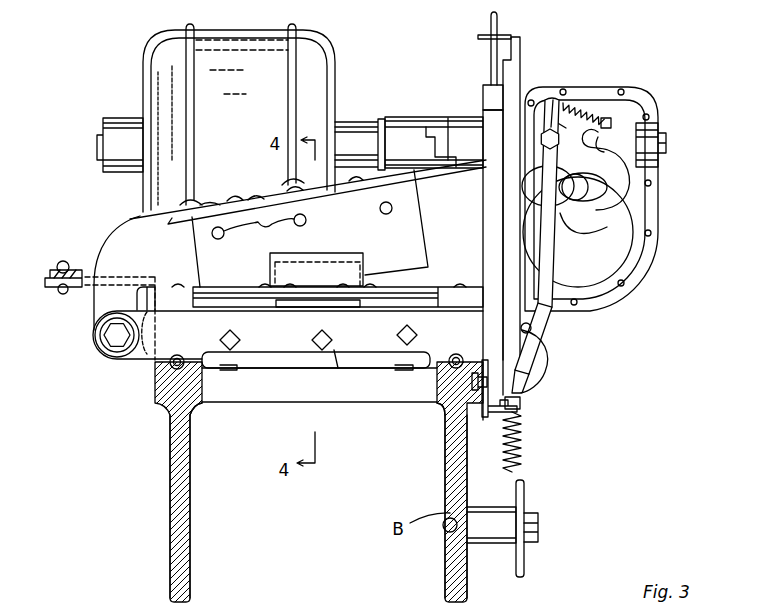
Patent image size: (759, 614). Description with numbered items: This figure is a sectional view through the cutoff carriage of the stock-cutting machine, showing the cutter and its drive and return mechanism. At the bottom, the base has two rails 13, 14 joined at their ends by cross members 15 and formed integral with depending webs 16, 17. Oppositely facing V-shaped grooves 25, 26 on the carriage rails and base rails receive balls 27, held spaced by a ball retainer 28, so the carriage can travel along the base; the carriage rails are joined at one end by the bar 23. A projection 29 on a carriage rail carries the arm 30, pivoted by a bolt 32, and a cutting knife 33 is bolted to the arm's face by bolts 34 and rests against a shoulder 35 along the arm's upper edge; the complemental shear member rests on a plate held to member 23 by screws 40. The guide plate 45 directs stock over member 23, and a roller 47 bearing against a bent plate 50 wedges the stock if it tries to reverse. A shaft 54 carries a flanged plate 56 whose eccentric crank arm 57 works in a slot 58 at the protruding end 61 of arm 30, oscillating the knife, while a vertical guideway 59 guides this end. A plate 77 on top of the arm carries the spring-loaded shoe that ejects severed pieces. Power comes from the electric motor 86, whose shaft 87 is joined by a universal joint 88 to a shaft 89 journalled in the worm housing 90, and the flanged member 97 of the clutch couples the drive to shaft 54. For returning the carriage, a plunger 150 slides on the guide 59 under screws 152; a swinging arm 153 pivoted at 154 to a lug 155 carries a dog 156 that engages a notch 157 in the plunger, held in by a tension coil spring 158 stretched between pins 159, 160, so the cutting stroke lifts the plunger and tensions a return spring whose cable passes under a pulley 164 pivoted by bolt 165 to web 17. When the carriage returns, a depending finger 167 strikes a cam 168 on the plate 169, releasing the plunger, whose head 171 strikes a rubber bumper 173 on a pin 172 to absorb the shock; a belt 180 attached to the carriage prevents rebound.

The rail 13 is at (175, 408).
The rail 14 is at (440, 402).
The cross members 15 is at (280, 393).
The web 16 is at (182, 520).
The web 17 is at (453, 480).
The bar 23 is at (335, 350).
The V-shaped groove 25 is at (178, 357).
The V-shaped groove 26 is at (198, 410).
The balls 27 is at (158, 398).
The ball retainer 28 is at (147, 358).
The projection 29 is at (100, 352).
The arm 30 is at (120, 235).
The bolt 32 is at (107, 333).
The cutting knife 33 is at (203, 245).
The bolts 34 is at (259, 229).
The shoulder 35 is at (217, 200).
The screws 40 is at (317, 364).
The plate 45 is at (232, 292).
The roller 47 is at (286, 303).
The bent plate 50 is at (343, 252).
The shaft 54 is at (583, 230).
The flanged plate 56 is at (604, 247).
The crank arm 57 is at (606, 202).
The slot 58 is at (618, 166).
The vertical guideway 59 is at (495, 198).
The protruding end 61 is at (619, 182).
The plate 77 is at (253, 195).
The electric motor 86 is at (150, 53).
The shaft 87 is at (375, 142).
The universal joint 88 is at (443, 127).
The shaft 89 is at (663, 137).
The housing 90 is at (609, 293).
The flanged member 97 is at (618, 263).
The plunger 150 is at (503, 179).
The screws 152 is at (541, 104).
The swinging arm 153 is at (548, 312).
The pivot 154 is at (549, 129).
The lug 155 is at (598, 137).
The dog 156 is at (519, 377).
The notch 157 is at (530, 375).
The tension coil spring 158 is at (588, 110).
The pin 159 is at (557, 125).
The pin 160 is at (609, 123).
The pulley 164 is at (522, 498).
The bolt 165 is at (538, 523).
The depending finger 167 is at (514, 430).
The cam 168 is at (485, 421).
The plate 169 is at (520, 400).
The head 171 is at (478, 37).
The pin 172 is at (489, 17).
The rubber bumper 173 is at (492, 88).
The belt 180 is at (75, 263).